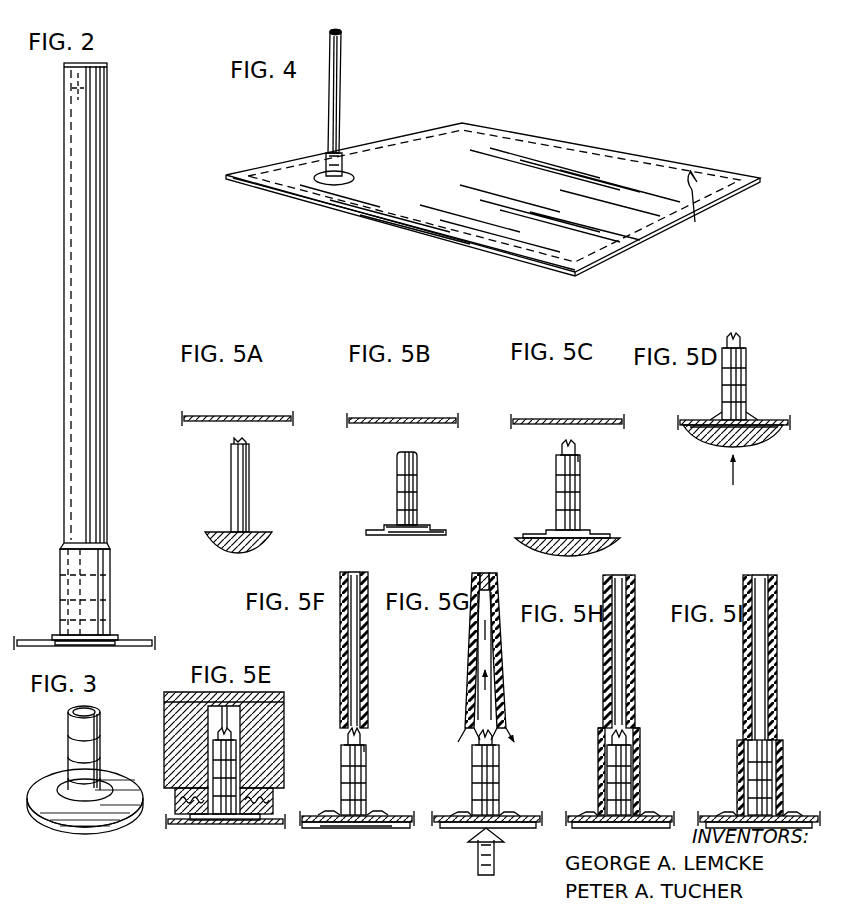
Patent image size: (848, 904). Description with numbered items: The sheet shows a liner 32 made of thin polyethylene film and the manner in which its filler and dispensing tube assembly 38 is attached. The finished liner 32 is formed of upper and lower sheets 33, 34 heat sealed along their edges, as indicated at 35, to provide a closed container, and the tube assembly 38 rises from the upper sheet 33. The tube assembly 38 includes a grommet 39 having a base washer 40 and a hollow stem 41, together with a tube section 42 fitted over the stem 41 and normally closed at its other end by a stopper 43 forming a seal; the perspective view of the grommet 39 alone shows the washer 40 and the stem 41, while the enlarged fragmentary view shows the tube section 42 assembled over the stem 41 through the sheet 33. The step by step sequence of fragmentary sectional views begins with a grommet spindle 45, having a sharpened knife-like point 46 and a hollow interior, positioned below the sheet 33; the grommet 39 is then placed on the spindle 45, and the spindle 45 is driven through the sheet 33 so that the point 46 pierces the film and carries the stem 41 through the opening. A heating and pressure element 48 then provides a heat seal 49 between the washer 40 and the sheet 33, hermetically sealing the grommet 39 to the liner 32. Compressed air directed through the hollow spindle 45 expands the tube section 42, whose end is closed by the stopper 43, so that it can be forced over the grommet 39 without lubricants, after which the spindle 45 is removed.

In FIG. 4, the liner 32 is at (680, 132).
In FIG. 2, the upper sheet 33 is at (134, 640).
In FIG. 4, the upper sheet 33 is at (521, 138).
In FIG. 5A, the upper sheet 33 is at (258, 418).
In FIG. 5B, the upper sheet 33 is at (428, 420).
In FIG. 5C, the upper sheet 33 is at (586, 420).
In FIG. 5D, the upper sheet 33 is at (768, 420).
In FIG. 5E, the upper sheet 33 is at (275, 825).
In FIG. 5F, the upper sheet 33 is at (406, 830).
In FIG. 5G, the upper sheet 33 is at (520, 818).
In FIG. 5H, the upper sheet 33 is at (652, 818).
In FIG. 5I, the upper sheet 33 is at (804, 818).
In FIG. 4, the lower sheet 34 is at (375, 217).
In FIG. 4, the heat sealed edges 35 is at (691, 176).
In FIG. 2, the filler and dispensing tube assembly 38 is at (107, 208).
In FIG. 4, the filler and dispensing tube assembly 38 is at (342, 91).
In FIG. 2, the grommet 39 is at (116, 648).
In FIG. 3, the grommet 39 is at (92, 833).
In FIG. 5B, the grommet 39 is at (418, 496).
In FIG. 5C, the grommet 39 is at (581, 486).
In FIG. 5D, the grommet 39 is at (748, 392).
In FIG. 5E, the grommet 39 is at (216, 828).
In FIG. 5F, the grommet 39 is at (368, 781).
In FIG. 5G, the grommet 39 is at (500, 779).
In FIG. 5H, the grommet 39 is at (641, 774).
In FIG. 5I, the grommet 39 is at (781, 772).
In FIG. 2, the base washer 40 is at (56, 645).
In FIG. 4, the base washer 40 is at (334, 178).
In FIG. 3, the base washer 40 is at (120, 812).
In FIG. 5B, the base washer 40 is at (433, 530).
In FIG. 5C, the base washer 40 is at (596, 532).
In FIG. 5D, the base washer 40 is at (762, 434).
In FIG. 5E, the base washer 40 is at (240, 822).
In FIG. 5F, the base washer 40 is at (336, 830).
In FIG. 5G, the base washer 40 is at (505, 829).
In FIG. 5H, the base washer 40 is at (636, 829).
In FIG. 5I, the base washer 40 is at (778, 816).
In FIG. 2, the hollow stem 41 is at (108, 574).
In FIG. 3, the hollow stem 41 is at (99, 740).
In FIG. 5B, the hollow stem 41 is at (418, 463).
In FIG. 5C, the hollow stem 41 is at (580, 502).
In FIG. 5D, the hollow stem 41 is at (747, 362).
In FIG. 5F, the hollow stem 41 is at (367, 757).
In FIG. 5G, the hollow stem 41 is at (500, 754).
In FIG. 5H, the hollow stem 41 is at (640, 757).
In FIG. 5I, the hollow stem 41 is at (776, 752).
In FIG. 2, the tube section 42 is at (90, 285).
In FIG. 4, the tube section 42 is at (340, 122).
In FIG. 5F, the tube section 42 is at (368, 632).
In FIG. 5G, the tube section 42 is at (502, 652).
In FIG. 5H, the tube section 42 is at (635, 622).
In FIG. 5I, the tube section 42 is at (777, 637).
In FIG. 2, the stopper 43 is at (108, 78).
In FIG. 4, the stopper 43 is at (340, 30).
In FIG. 5A, the grommet spindle 45 is at (250, 484).
In FIG. 5C, the grommet spindle 45 is at (578, 456).
In FIG. 5D, the grommet spindle 45 is at (745, 342).
In FIG. 5E, the grommet spindle 45 is at (232, 734).
In FIG. 5F, the grommet spindle 45 is at (362, 736).
In FIG. 5G, the grommet spindle 45 is at (495, 736).
In FIG. 5H, the grommet spindle 45 is at (628, 733).
In FIG. 5A, the knife-like point 46 is at (246, 440).
In FIG. 5C, the knife-like point 46 is at (575, 441).
In FIG. 5D, the knife-like point 46 is at (738, 336).
In FIG. 5E, the heating and pressure element 48 is at (270, 802).
In FIG. 5F, the heat seal 49 is at (378, 816).
In FIG. 5G, the heat seal 49 is at (470, 818).
In FIG. 5H, the heat seal 49 is at (596, 818).
In FIG. 5I, the heat seal 49 is at (733, 818).